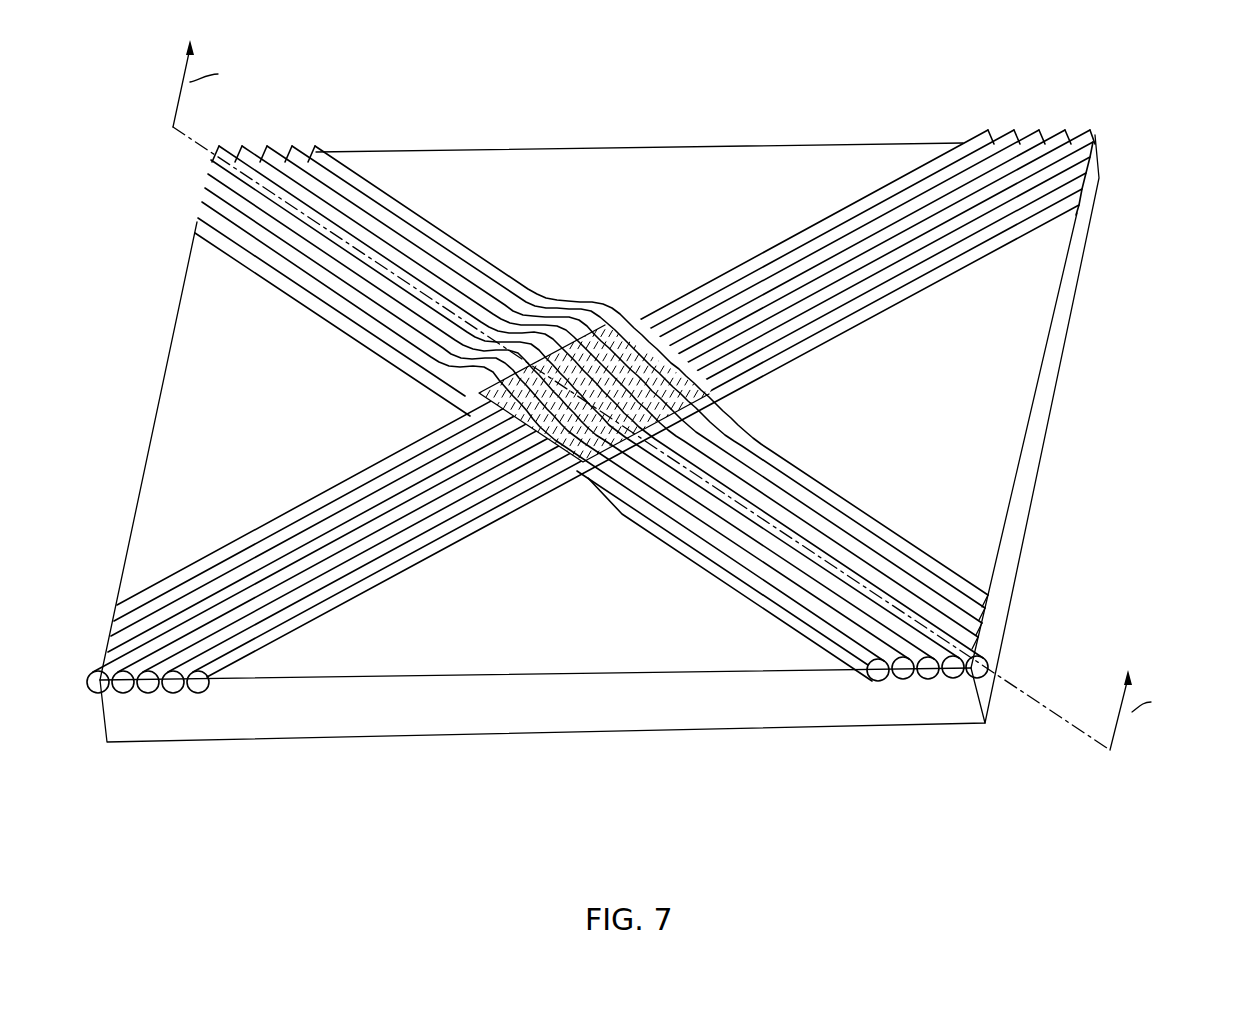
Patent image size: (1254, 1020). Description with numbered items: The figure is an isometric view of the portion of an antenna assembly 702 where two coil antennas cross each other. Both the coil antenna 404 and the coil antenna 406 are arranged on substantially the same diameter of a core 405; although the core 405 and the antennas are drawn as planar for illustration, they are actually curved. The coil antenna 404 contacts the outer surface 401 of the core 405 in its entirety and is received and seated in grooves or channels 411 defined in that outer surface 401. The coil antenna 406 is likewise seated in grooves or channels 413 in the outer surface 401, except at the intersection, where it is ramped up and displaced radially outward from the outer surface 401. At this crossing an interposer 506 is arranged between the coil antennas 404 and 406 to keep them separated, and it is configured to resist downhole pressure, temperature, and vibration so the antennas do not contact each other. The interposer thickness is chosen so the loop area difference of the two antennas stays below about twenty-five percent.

The antenna assembly 702 is at (1014, 50).
The outer surface 401 is at (645, 672).
The coil antenna 404 is at (1098, 192).
The core 405 is at (355, 706).
The coil antenna 406 is at (987, 597).
The grooves or channels 411 is at (213, 688).
The grooves or channels 413 is at (252, 256).
The interposer 506 is at (479, 393).